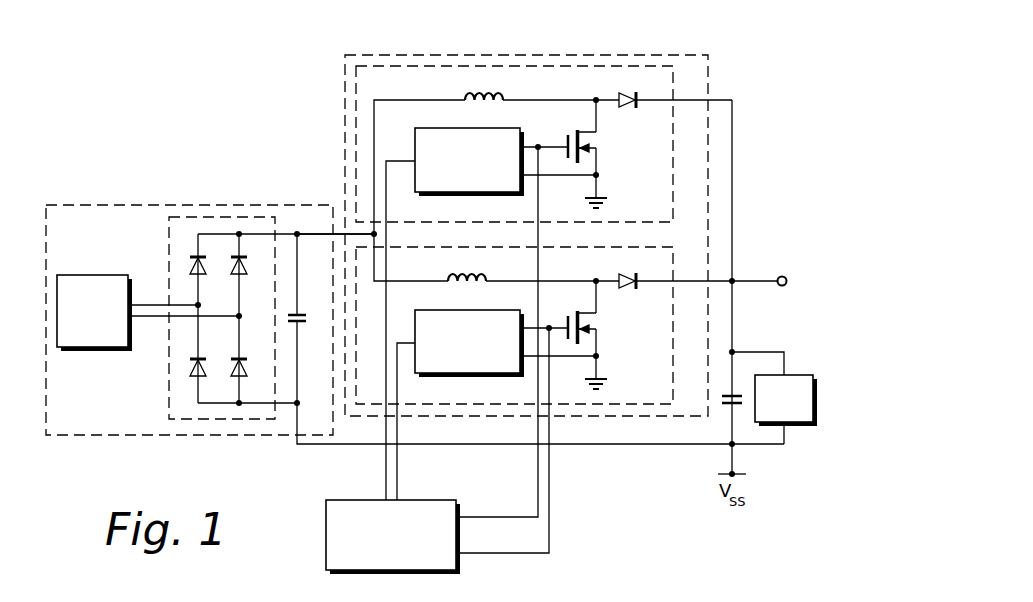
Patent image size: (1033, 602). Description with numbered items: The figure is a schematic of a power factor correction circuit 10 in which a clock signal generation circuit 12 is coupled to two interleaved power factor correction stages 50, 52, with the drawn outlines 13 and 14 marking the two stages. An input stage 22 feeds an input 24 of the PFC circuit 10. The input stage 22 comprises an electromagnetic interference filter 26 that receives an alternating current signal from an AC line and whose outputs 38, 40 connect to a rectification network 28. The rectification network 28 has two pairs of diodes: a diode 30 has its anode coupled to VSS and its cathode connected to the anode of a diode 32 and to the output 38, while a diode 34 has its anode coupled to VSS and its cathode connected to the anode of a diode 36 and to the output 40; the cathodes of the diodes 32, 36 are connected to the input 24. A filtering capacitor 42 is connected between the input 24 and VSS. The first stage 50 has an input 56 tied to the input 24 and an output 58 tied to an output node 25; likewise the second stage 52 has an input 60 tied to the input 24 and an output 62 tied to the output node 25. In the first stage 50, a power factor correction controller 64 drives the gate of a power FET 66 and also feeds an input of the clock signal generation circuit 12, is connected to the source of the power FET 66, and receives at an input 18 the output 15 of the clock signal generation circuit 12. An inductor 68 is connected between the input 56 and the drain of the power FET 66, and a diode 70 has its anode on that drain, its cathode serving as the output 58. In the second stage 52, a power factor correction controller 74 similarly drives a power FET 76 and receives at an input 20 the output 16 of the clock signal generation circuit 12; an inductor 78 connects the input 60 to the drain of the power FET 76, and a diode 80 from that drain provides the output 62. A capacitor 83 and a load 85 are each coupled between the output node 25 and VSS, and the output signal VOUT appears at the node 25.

The power factor correction circuit 10 is at (208, 479).
The clock signal generation circuit 12 is at (326, 528).
The first PFC converter stage 13 is at (673, 195).
The second PFC converter stage 14 is at (673, 376).
The output of clock signal generation circuit 15 is at (386, 500).
The output of clock signal generation circuit 16 is at (397, 500).
The input of PFC circuit 18 is at (386, 468).
The input of PFC circuit 20 is at (397, 468).
The input stage 22 is at (206, 204).
The input of PFC circuit 24 is at (333, 232).
The output node 25 is at (733, 280).
The electromagnetic interference filter 26 is at (94, 275).
The rectification network 28 is at (166, 246).
The diode 30 is at (203, 357).
The diode 32 is at (200, 278).
The diode 34 is at (243, 357).
The diode 36 is at (241, 278).
The output of EMI filter 38 is at (148, 302).
The output of EMI filter 40 is at (148, 321).
The filtering capacitor 42 is at (299, 312).
The power factor correction stage 50 is at (673, 139).
The power factor correction stage 52 is at (531, 325).
The input of power factor correction stage 56 is at (449, 101).
The output of power factor correction stage 58 is at (684, 99).
The input of power factor correction stage 60 is at (434, 282).
The output of power factor correction stage 62 is at (684, 280).
The power factor correction controller 64 is at (490, 128).
The power field effect transistor 66 is at (592, 142).
The inductor 68 is at (505, 90).
The diode 70 is at (636, 104).
The power factor correction controller 74 is at (490, 310).
The power field effect transistor 76 is at (592, 324).
The inductor 78 is at (487, 271).
The diode 80 is at (636, 285).
The capacitor 83 is at (723, 406).
The load 85 is at (800, 425).